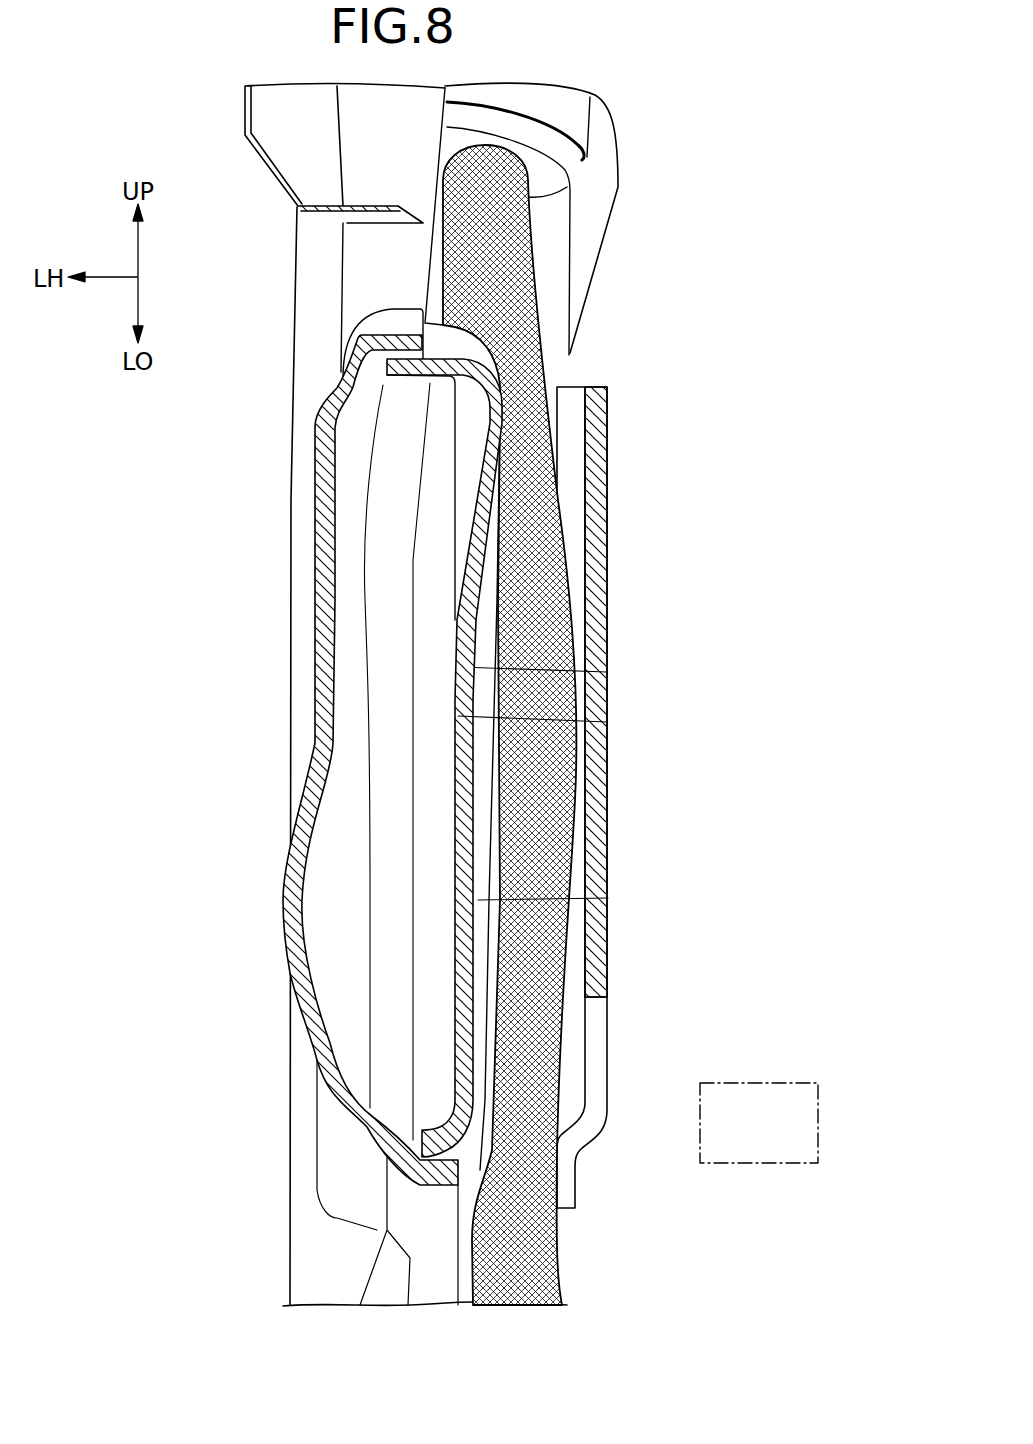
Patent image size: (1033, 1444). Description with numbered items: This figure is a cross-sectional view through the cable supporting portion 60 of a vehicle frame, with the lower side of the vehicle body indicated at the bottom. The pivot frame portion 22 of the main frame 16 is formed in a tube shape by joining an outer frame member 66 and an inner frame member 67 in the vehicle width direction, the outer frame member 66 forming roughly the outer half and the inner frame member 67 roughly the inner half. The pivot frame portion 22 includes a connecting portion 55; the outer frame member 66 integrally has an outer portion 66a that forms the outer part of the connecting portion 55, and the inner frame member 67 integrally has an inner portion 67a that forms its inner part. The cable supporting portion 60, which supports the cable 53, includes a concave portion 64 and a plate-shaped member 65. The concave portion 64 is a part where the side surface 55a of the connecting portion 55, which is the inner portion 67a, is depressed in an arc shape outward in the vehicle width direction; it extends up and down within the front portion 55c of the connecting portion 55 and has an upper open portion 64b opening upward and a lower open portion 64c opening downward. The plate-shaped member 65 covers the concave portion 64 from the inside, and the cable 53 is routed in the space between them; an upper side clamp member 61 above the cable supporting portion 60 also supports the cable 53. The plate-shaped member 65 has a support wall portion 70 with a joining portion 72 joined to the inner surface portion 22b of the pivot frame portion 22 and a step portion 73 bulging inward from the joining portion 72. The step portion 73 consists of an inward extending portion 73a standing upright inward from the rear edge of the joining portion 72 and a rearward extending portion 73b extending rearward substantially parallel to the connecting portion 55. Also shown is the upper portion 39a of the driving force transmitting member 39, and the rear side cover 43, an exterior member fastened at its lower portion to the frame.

The main frame 16 is at (298, 307).
The pivot frame portion 22 is at (297, 353).
The inner surface portion 22b is at (568, 378).
The driving force transmitting member 39 is at (777, 1083).
The upper portion 39a is at (807, 1080).
The rear side cover 43 is at (247, 115).
The cable 53 is at (568, 543).
The connecting portion 55 is at (318, 608).
The side surface 55a is at (608, 898).
The front portion 55c is at (315, 682).
The cable supporting portion 60 is at (620, 437).
The upper side clamp member 61 is at (557, 97).
The concave portion 64 is at (607, 722).
The upper open portion 64b is at (544, 388).
The lower open portion 64c is at (519, 1191).
The plate-shaped member 65 is at (607, 610).
The outer frame member 66 is at (312, 403).
The outer portion 66a is at (330, 640).
The inner frame member 67 is at (570, 317).
The inner portion 67a is at (607, 672).
The support wall portion 70 is at (608, 838).
The joining portion 72 is at (577, 1190).
The step portion 73 is at (717, 995).
The inward extending portion 73a is at (595, 1133).
The rearward extending portion 73b is at (607, 1047).